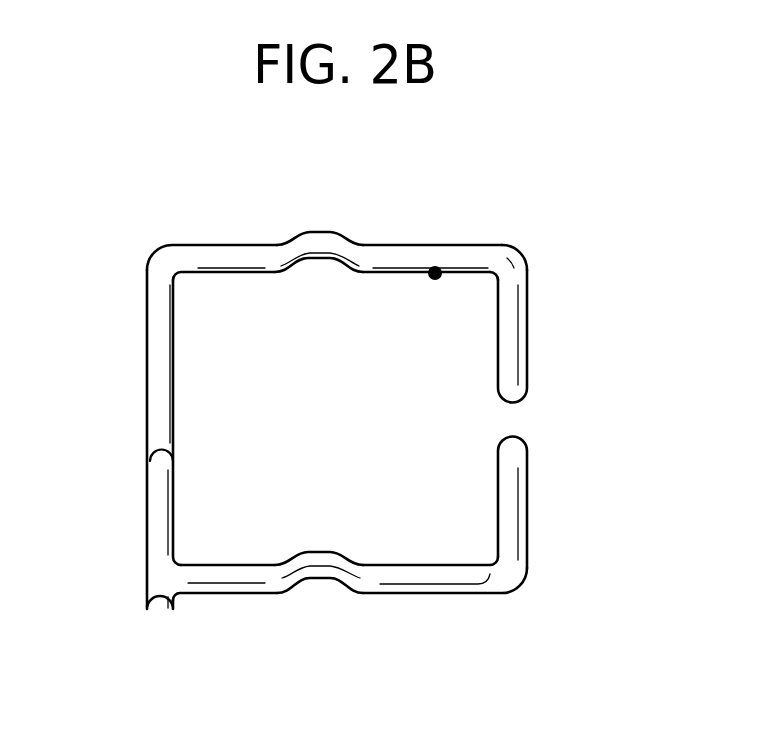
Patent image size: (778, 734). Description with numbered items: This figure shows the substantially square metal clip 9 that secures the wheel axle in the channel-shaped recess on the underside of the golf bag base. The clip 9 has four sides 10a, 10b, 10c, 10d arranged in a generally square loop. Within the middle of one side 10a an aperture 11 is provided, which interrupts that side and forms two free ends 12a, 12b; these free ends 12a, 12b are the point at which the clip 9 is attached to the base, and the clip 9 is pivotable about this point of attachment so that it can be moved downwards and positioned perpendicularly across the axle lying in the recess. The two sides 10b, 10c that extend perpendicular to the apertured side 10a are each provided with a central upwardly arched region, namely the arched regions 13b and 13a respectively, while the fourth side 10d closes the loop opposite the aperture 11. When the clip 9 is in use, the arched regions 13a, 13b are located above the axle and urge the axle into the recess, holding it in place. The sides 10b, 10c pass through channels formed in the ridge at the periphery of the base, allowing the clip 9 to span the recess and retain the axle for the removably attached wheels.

The metal clip 9 is at (443, 265).
The side of clip 10a is at (515, 263).
The side of clip 10b is at (226, 260).
The side of clip 10c is at (221, 583).
The side of clip 10d is at (162, 404).
The aperture 11 is at (500, 418).
The free end 12a is at (520, 401).
The free end 12b is at (522, 438).
The arched region 13a is at (326, 560).
The arched region 13b is at (322, 245).